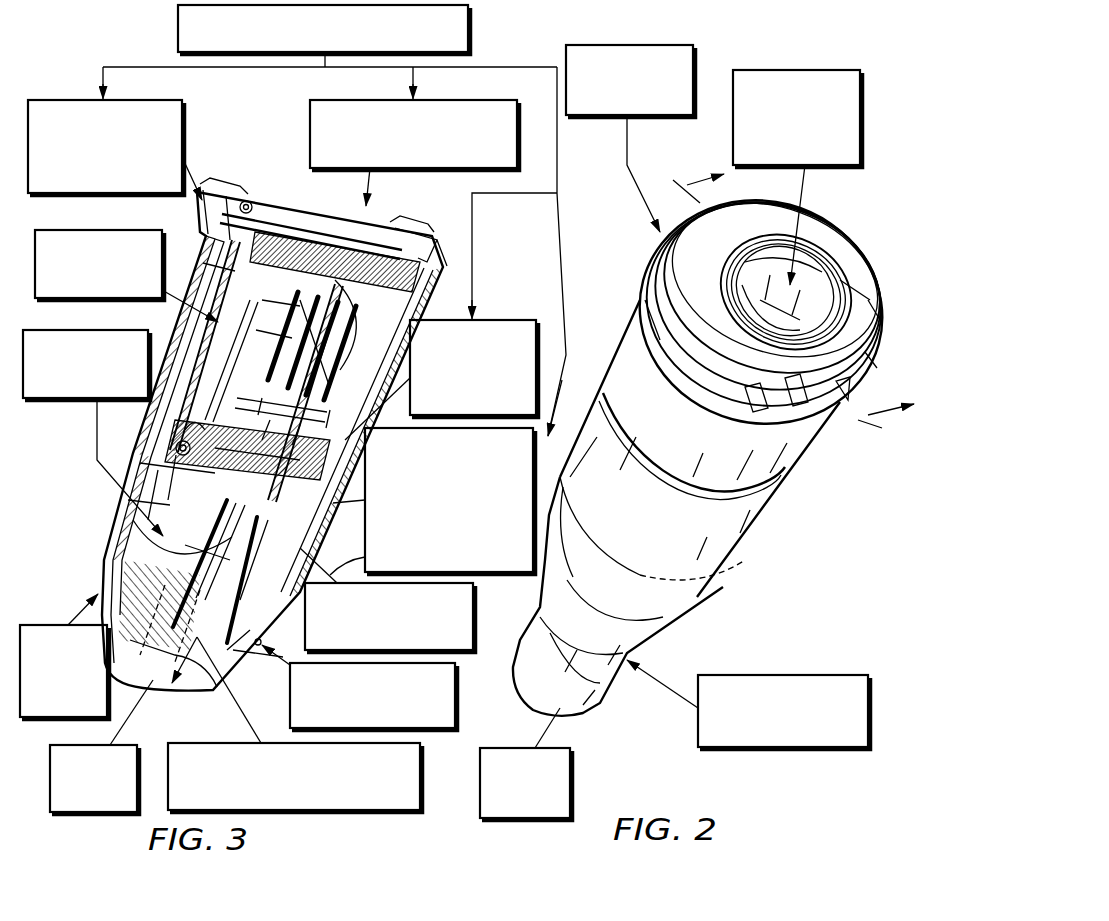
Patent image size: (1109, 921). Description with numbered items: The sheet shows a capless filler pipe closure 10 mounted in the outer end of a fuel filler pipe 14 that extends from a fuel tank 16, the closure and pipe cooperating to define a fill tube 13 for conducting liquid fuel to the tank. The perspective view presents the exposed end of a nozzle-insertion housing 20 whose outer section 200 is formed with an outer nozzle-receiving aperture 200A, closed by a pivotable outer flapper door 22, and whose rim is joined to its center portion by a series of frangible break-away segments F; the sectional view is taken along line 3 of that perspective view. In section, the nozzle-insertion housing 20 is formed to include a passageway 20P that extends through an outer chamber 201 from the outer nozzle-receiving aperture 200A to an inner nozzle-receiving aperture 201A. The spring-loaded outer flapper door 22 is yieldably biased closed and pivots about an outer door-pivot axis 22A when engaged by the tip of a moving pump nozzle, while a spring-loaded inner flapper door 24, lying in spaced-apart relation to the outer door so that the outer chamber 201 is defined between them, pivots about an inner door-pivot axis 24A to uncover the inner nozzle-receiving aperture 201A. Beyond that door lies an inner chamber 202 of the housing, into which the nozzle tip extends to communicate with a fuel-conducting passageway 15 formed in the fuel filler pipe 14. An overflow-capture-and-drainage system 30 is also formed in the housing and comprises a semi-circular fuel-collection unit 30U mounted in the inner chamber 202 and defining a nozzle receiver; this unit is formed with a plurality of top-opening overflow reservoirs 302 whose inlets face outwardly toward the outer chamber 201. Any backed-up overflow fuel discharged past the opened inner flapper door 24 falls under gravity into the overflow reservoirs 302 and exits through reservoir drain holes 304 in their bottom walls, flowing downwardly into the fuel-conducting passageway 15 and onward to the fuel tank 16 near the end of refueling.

In FIG. 3, the capless filler pipe closure 10 is at (178, 28).
In FIG. 2, the capless filler pipe closure 10 is at (620, 45).
In FIG. 2, the fill tube 13 is at (858, 530).
In FIG. 3, the fuel filler pipe 14 is at (50, 625).
In FIG. 2, the fuel filler pipe 14 is at (740, 675).
In FIG. 3, the fuel-conducting passageway 15 is at (420, 775).
In FIG. 3, the fuel tank 16 is at (50, 775).
In FIG. 2, the fuel tank 16 is at (570, 785).
In FIG. 3, the nozzle-insertion housing 20 is at (65, 100).
In FIG. 2, the nozzle-insertion housing 20 is at (870, 236).
In FIG. 3, the passageway 20P is at (203, 263).
In FIG. 2, the outer section 200 is at (632, 297).
In FIG. 3, the outer nozzle-receiving aperture 200A is at (397, 233).
In FIG. 2, the outer nozzle-receiving aperture 200A is at (842, 280).
In FIG. 3, the outer chamber 201 is at (80, 230).
In FIG. 3, the inner nozzle-receiving aperture 201A is at (181, 557).
In FIG. 3, the inner chamber 202 is at (78, 330).
In FIG. 3, the outer flapper door 22 is at (310, 124).
In FIG. 2, the outer flapper door 22 is at (785, 70).
In FIG. 3, the outer door-pivot axis 22A is at (244, 198).
In FIG. 3, the inner flapper door 24 is at (500, 318).
In FIG. 3, the inner door-pivot axis 24A is at (262, 403).
In FIG. 3, the overflow-capture-and-drainage system 30 is at (473, 600).
In FIG. 2, the overflow-capture-and-drainage system 30 is at (627, 596).
In FIG. 3, the fuel-collection unit 30U is at (114, 522).
In FIG. 3, the overflow reservoirs 302 is at (476, 640).
In FIG. 3, the reservoir drain holes 304 is at (456, 685).
In FIG. 2, the section line 3- 3 is at (786, 307).
In FIG. 2, the break-away segments F is at (880, 323).